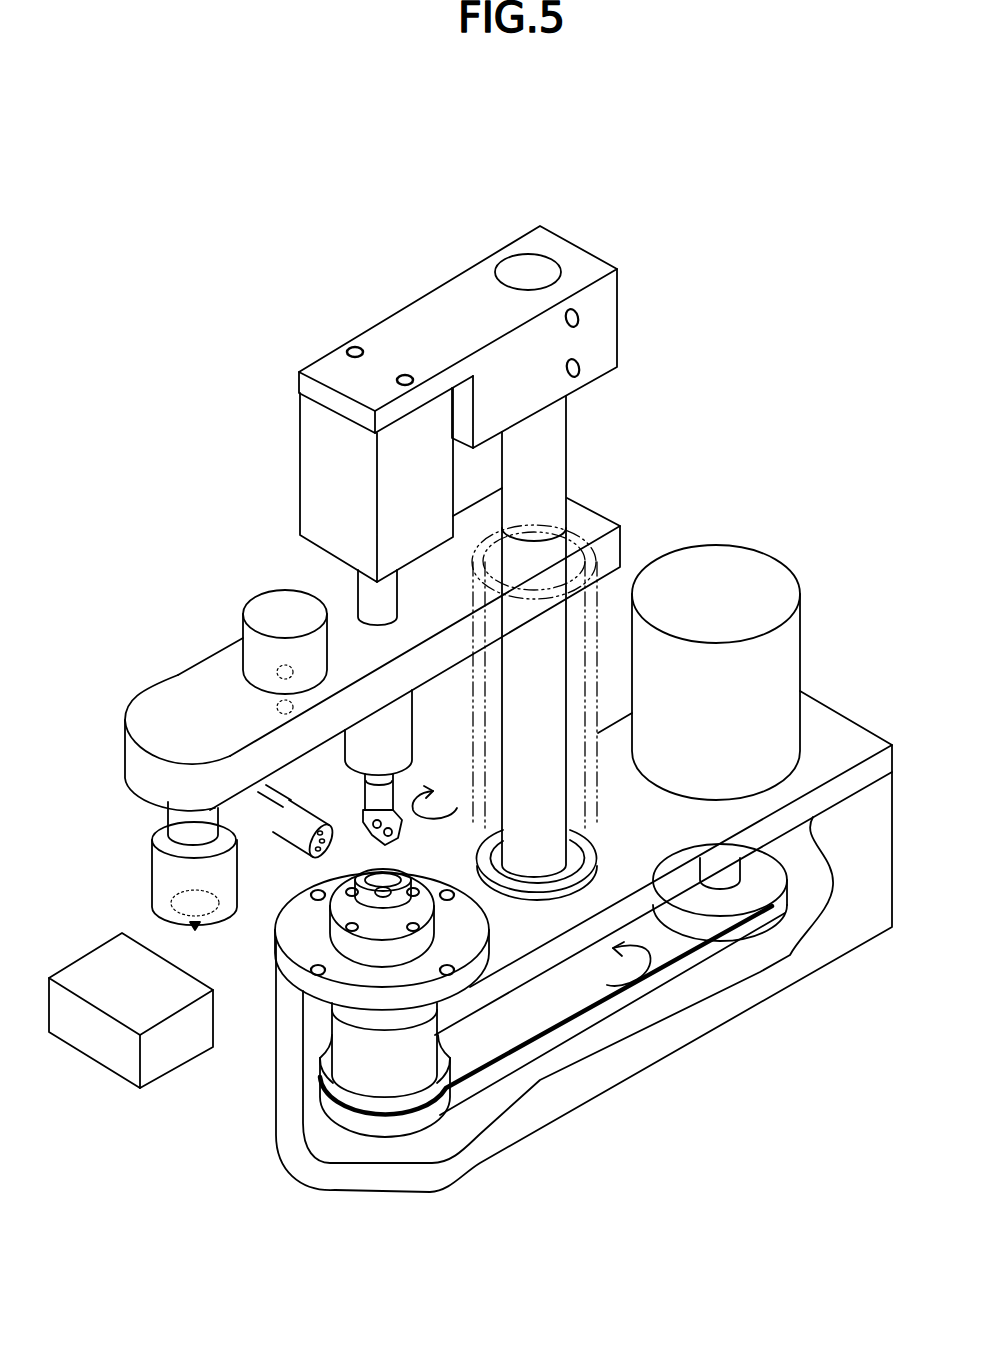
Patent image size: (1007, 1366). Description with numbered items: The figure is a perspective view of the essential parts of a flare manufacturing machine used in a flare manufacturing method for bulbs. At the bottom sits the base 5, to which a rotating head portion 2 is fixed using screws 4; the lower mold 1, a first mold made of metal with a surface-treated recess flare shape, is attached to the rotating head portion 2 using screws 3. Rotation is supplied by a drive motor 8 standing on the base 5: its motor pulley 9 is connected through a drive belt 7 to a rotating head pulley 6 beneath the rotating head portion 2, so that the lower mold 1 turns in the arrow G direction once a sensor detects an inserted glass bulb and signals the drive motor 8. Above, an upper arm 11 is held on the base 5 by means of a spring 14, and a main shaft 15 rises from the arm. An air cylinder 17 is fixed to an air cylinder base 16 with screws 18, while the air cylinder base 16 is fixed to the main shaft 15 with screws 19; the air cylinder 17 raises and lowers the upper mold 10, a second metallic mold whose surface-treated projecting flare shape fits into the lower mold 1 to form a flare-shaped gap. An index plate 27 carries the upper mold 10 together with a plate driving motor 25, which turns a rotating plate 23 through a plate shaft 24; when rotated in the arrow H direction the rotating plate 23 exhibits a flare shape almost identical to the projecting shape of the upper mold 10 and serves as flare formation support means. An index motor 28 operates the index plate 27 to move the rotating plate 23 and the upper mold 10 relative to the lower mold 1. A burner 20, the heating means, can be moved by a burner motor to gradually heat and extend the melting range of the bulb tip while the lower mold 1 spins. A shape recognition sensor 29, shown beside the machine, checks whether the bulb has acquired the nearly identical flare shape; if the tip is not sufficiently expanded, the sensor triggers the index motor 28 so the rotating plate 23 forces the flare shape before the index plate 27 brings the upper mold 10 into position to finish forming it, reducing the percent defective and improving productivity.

The lower mold 1 is at (397, 908).
The rotating head portion 2 is at (347, 1065).
The screws 3 is at (455, 965).
The screws 4 is at (317, 973).
The base 5 is at (833, 722).
The rotating head pulley 6 is at (382, 1100).
The drive belt 7 is at (620, 1003).
The drive motor 8 is at (767, 583).
The motor pulley 9 is at (765, 887).
The upper mold 10 is at (163, 875).
The upper arm 11 is at (595, 522).
The spring 14 is at (597, 802).
The main shaft 15 is at (552, 467).
The air cylinder base 16 is at (592, 265).
The air cylinder 17 is at (310, 452).
The screws 18 is at (350, 348).
The screws 19 is at (600, 318).
The burner 20 is at (287, 827).
The rotating plate 23 is at (385, 833).
The plate shaft 24 is at (385, 797).
The plate driving motor 25 is at (393, 733).
The index plate 27 is at (140, 803).
The index motor 28 is at (257, 607).
The shape recognition sensor 29 is at (120, 1063).
The arrow G direction G is at (619, 964).
The arrow H direction H is at (441, 793).